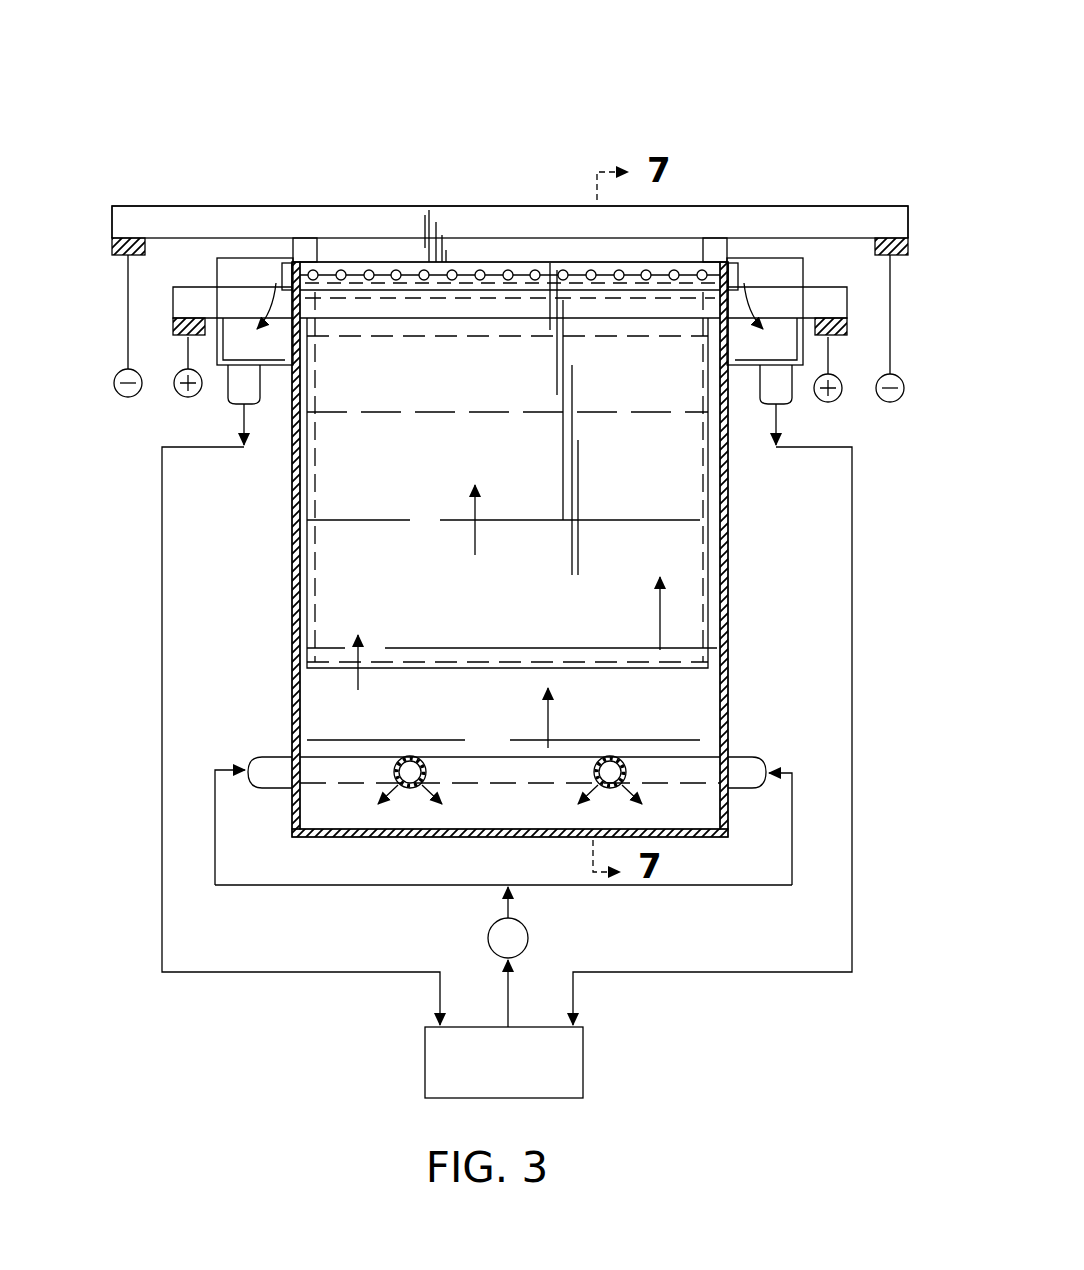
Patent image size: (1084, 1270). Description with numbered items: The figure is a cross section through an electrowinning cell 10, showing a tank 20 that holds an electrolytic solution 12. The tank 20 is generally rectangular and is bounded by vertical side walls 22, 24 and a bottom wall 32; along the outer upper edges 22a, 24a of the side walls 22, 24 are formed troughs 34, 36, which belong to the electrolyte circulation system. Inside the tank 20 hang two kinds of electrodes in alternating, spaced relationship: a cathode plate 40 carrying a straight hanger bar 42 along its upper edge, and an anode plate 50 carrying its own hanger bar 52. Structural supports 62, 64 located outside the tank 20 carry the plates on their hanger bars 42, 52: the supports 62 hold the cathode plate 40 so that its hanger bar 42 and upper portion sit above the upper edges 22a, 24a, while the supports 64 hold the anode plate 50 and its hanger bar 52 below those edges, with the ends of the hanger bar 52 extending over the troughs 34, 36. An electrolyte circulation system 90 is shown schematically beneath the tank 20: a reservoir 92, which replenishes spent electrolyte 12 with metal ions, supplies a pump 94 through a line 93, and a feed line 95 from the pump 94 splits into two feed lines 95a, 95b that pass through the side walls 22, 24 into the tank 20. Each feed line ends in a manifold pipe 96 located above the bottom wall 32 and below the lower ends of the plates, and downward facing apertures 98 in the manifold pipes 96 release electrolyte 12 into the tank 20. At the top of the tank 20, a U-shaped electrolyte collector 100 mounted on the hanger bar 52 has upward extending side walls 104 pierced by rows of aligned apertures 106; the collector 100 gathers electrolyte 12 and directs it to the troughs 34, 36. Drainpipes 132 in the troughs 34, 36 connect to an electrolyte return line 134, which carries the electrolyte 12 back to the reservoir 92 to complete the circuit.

The cell 10 is at (642, 70).
The electrolytic solution 12 is at (315, 688).
The tank 20 is at (737, 668).
The side wall 22 is at (290, 598).
The upper edge 22a is at (287, 262).
The side wall 24 is at (731, 592).
The upper edge 24a is at (733, 262).
The bottom wall 32 is at (455, 838).
The trough 34 is at (231, 320).
The trough 36 is at (782, 324).
The cathode plate 40 is at (388, 252).
The hanger bar 42 is at (260, 215).
The anode plate 50 is at (330, 497).
The hanger bar 52 is at (243, 300).
The structural support 62 is at (112, 252).
The structural support 64 is at (178, 328).
The electrolyte circulation system 90 is at (380, 1010).
The reservoir 92 is at (583, 1066).
The line 93 is at (508, 995).
The pump 94 is at (530, 940).
The feed line 95 is at (505, 908).
The feed line 95a is at (272, 778).
The feed line 95b is at (740, 783).
The manifold pipe 96 is at (418, 757).
The aperture 98 is at (428, 778).
The electrolyte collector 100 is at (497, 262).
The side wall 104 is at (585, 268).
The aperture 106 is at (424, 268).
The drainpipe 132 is at (237, 400).
The electrolyte return line 134 is at (160, 692).